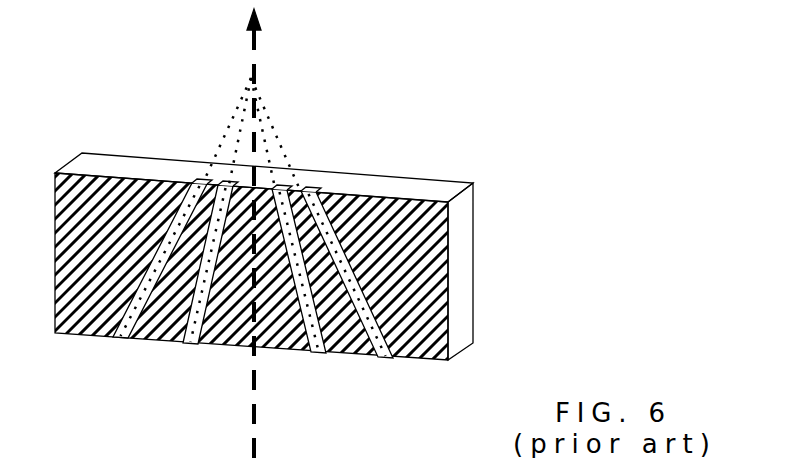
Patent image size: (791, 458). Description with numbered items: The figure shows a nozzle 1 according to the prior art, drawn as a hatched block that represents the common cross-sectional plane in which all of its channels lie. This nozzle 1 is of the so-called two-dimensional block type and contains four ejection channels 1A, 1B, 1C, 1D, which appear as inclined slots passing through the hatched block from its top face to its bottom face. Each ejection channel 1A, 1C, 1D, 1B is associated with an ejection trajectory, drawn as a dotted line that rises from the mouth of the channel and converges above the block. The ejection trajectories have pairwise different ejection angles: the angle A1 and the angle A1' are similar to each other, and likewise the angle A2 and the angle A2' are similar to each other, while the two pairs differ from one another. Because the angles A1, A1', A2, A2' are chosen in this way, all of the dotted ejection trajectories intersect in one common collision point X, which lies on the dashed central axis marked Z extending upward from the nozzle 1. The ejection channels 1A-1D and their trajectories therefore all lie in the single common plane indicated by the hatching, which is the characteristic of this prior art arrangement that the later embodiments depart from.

The nozzle 1 is at (319, 216).
The ejection channel 1A is at (122, 338).
The ejection channel 1B is at (385, 355).
The ejection channel 1C is at (191, 340).
The ejection channel 1D is at (318, 350).
The ejection angle A1 is at (192, 130).
The ejection angle A2 is at (219, 131).
The ejection angle A1' is at (337, 135).
The ejection angle A2' is at (298, 133).
The Z axis Z is at (256, 32).
The common collision point X is at (256, 88).